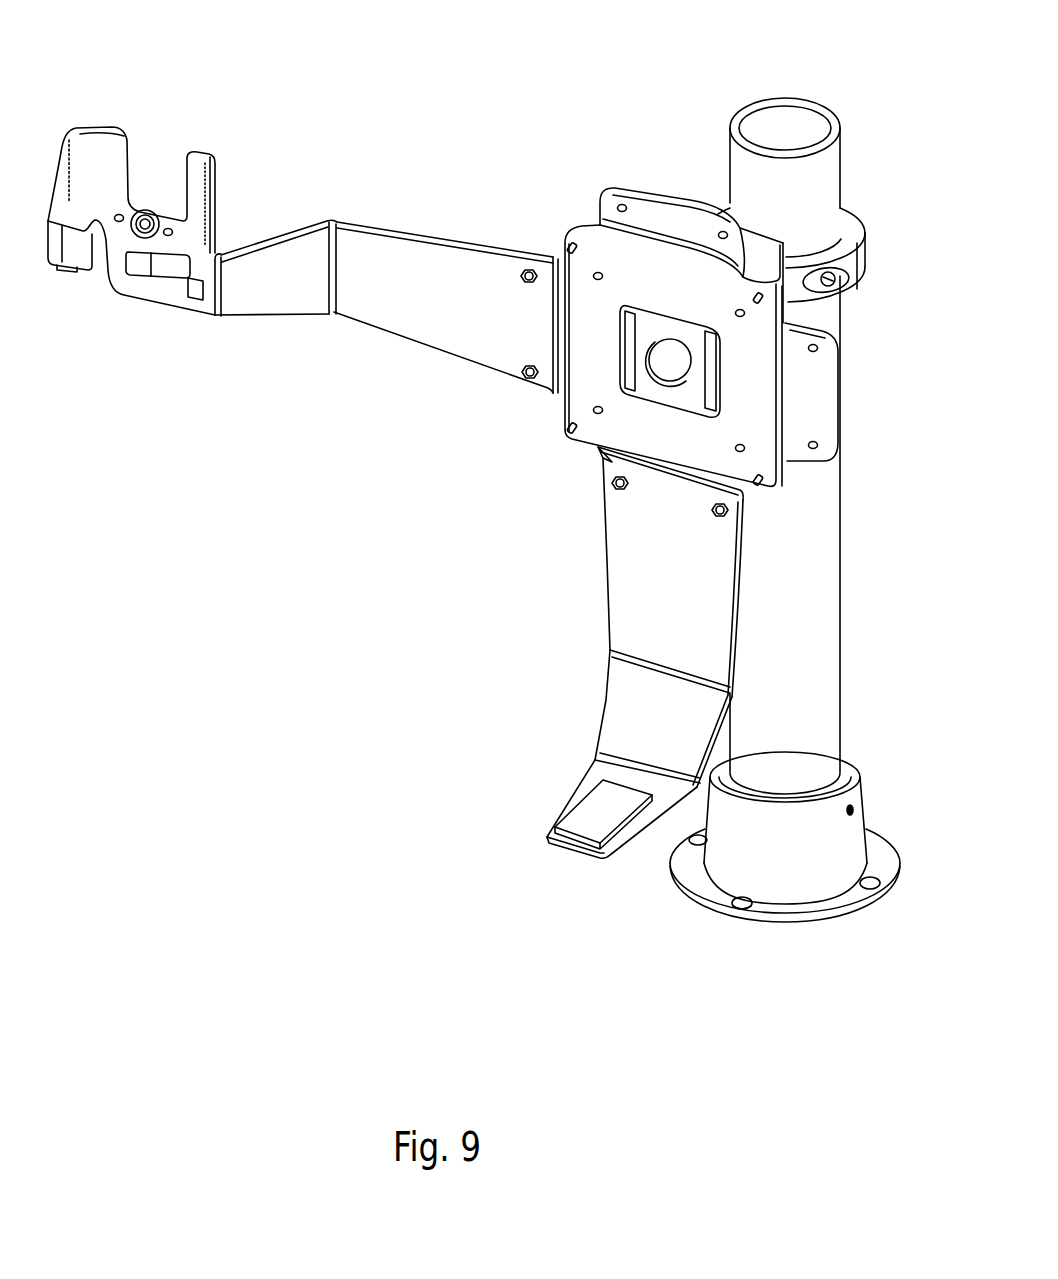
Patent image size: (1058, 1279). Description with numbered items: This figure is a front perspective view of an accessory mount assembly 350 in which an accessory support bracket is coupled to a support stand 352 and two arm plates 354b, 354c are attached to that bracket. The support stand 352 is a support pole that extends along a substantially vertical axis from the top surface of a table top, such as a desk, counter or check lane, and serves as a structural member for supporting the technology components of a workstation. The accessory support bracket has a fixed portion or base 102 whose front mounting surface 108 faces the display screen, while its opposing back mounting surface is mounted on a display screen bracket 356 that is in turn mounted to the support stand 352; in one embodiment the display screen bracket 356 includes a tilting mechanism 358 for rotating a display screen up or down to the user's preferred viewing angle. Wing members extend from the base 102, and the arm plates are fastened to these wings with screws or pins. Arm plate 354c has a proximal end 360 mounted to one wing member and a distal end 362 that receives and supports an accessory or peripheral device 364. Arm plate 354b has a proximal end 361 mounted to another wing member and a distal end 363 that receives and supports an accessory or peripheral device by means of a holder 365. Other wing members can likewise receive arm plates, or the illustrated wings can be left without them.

The accessory mount assembly 350 is at (622, 108).
The support stand 352 is at (839, 599).
The display screen bracket 356 is at (859, 212).
The tilting mechanism 358 is at (754, 252).
The base 102 is at (758, 430).
The front mounting surface 108 is at (583, 392).
The proximal end 361 is at (560, 333).
The arm plate 354b is at (407, 347).
The holder 365 is at (200, 153).
The distal end 363 is at (204, 300).
The arm plate 354c is at (603, 584).
The proximal end 360 is at (658, 466).
The distal end 362 is at (554, 851).
The accessory or peripheral device 364 is at (605, 805).